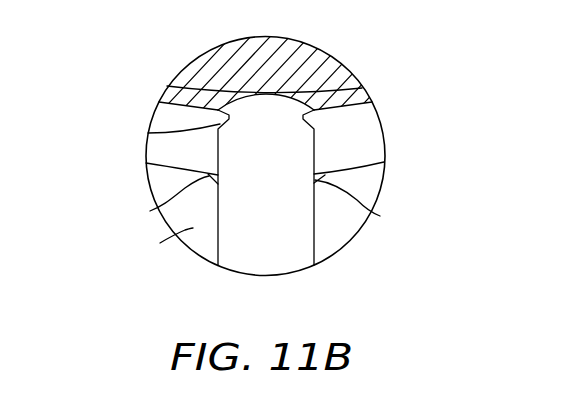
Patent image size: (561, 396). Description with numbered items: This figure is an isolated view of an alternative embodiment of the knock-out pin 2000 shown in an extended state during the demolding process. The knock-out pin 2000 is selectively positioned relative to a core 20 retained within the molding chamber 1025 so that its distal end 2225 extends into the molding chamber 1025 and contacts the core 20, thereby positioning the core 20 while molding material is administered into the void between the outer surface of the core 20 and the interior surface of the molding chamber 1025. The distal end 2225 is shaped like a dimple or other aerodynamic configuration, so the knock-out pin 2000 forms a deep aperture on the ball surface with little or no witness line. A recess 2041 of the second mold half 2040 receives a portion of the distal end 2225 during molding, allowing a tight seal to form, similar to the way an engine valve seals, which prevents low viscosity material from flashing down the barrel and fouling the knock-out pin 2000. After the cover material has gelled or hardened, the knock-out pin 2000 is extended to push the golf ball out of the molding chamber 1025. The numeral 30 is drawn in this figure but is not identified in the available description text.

The core 20 is at (321, 54).
The wall portion 30 is at (350, 95).
The knock-out pin 2000 is at (285, 247).
The distal end 2225 is at (148, 133).
The molding chamber 1025 is at (358, 141).
The recess 2041 is at (150, 211).
The second mold half 2040 is at (160, 243).